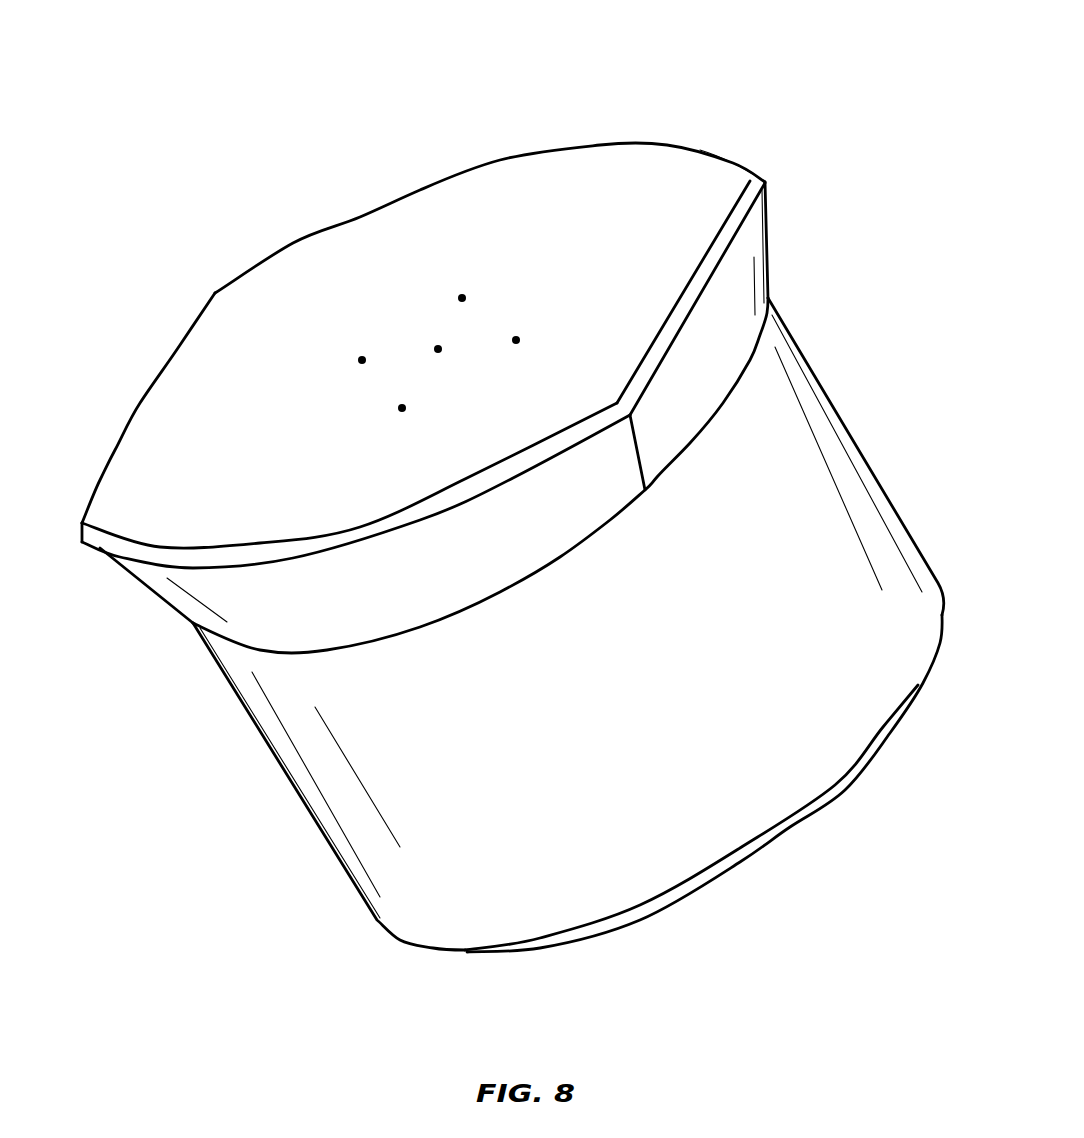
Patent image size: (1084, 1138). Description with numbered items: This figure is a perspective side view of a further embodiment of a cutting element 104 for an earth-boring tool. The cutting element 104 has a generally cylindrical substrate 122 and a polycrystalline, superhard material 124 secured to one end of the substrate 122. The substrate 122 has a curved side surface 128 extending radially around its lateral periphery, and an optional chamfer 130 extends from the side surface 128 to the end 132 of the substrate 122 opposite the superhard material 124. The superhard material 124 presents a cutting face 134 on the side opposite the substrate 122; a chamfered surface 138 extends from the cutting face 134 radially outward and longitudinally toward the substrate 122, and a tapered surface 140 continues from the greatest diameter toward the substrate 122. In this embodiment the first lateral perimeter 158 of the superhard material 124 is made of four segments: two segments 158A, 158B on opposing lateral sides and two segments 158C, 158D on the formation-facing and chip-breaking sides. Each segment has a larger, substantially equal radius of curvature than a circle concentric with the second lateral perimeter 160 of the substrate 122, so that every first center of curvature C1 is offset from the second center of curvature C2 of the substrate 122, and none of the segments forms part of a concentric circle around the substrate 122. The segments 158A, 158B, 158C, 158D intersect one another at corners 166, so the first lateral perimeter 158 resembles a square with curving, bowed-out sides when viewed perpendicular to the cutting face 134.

The cutting element 104 is at (243, 160).
The substrate 122 is at (308, 788).
The polycrystalline, superhard material 124 is at (370, 262).
The curved side surface 128 is at (424, 840).
The chamfer 130 is at (833, 786).
The end of the substrate 132 is at (744, 873).
The cutting face 134 is at (592, 208).
The chamfered surface 138 is at (98, 550).
The tapered surface 140 is at (186, 616).
The first lateral perimeter 158 is at (680, 148).
The segment 158A is at (486, 158).
The segment 158B is at (332, 537).
The segment 158C is at (131, 405).
The segment 158D is at (710, 280).
The second lateral perimeter 160 is at (866, 462).
The corners 166 is at (774, 180).
The first center of curvature C1 is at (439, 352).
The second center of curvature C2 is at (423, 335).